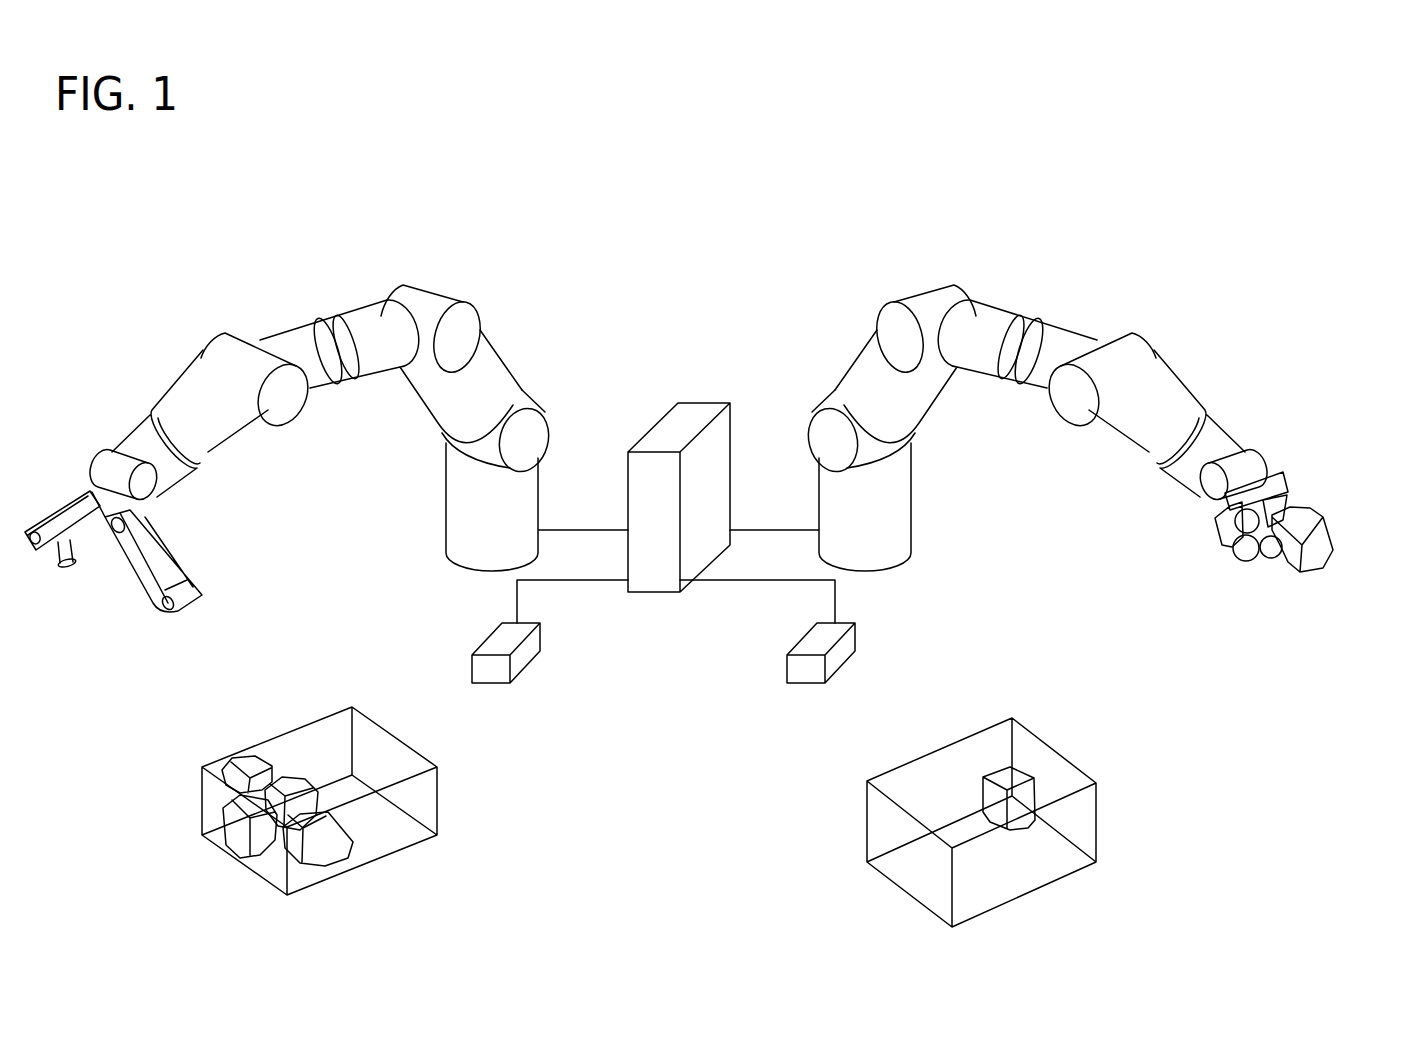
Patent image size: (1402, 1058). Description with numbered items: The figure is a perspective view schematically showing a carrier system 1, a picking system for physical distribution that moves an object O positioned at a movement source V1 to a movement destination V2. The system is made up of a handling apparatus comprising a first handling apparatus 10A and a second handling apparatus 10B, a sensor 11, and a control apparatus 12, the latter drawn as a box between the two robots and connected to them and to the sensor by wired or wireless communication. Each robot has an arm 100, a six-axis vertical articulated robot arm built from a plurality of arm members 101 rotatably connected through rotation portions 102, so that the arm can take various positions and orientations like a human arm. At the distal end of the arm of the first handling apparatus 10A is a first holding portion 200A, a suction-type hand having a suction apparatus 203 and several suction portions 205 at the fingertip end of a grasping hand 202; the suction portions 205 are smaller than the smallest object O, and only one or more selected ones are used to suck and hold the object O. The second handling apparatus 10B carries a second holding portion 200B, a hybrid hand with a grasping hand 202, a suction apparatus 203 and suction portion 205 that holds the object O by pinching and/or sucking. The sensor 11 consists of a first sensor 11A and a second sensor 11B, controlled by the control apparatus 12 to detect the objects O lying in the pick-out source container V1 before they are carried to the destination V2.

The carrier system 1 is at (1256, 149).
The first handling apparatus 10A is at (895, 260).
The second handling apparatus 10B is at (462, 260).
The arm 100 is at (678, 356).
The arm members 101 is at (287, 345).
The rotation portions 102 is at (220, 342).
The sensor 11 is at (731, 631).
The first sensor 11A is at (540, 637).
The second sensor 11B is at (855, 637).
The control apparatus 12 is at (658, 407).
The first holding portion 200A is at (1283, 451).
The second holding portion 200B is at (147, 459).
The grasping hand 202 is at (168, 563).
The suction apparatus 203 is at (165, 464).
The suction portion 205 is at (1275, 556).
The object O is at (1320, 531).
The movement source V1 is at (390, 733).
The movement destination V2 is at (1050, 747).